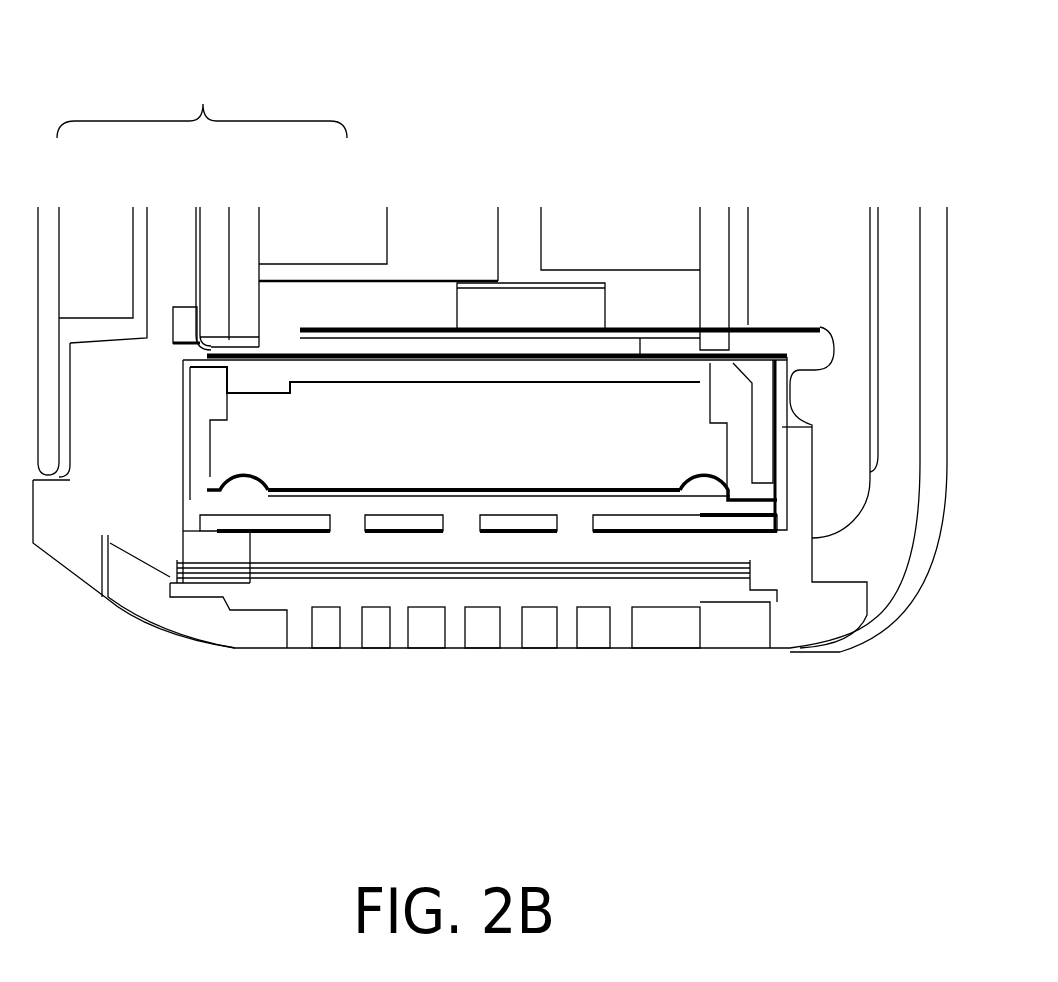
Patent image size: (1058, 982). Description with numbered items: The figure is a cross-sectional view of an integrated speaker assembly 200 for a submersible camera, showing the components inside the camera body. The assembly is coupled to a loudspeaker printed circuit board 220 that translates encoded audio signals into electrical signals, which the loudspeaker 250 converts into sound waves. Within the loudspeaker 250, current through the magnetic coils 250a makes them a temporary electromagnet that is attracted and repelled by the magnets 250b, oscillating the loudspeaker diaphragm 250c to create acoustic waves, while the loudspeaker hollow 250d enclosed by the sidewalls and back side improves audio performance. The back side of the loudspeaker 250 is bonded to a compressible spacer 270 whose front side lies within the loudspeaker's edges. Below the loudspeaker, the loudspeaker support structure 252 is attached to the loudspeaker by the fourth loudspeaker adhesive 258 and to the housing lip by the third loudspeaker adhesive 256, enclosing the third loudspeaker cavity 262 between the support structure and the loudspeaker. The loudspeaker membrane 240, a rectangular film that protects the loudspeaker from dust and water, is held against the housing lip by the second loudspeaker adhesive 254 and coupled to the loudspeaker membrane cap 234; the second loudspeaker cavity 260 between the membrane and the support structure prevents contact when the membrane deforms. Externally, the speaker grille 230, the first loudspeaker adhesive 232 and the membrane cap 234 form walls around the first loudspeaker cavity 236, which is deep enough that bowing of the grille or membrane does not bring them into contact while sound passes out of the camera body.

The integrated speaker assembly 200 is at (537, 53).
The loudspeaker printed circuit board 220 is at (714, 262).
The compressible spacer 270 is at (574, 342).
The loudspeaker 250 is at (422, 213).
The magnetic coils 250a is at (308, 478).
The magnets 250b is at (357, 376).
The loudspeaker diaphragm 250c is at (250, 468).
The loudspeaker hollow 250d is at (420, 445).
The fourth loudspeaker adhesive 258 is at (205, 510).
The third loudspeaker adhesive 256 is at (217, 530).
The second loudspeaker adhesive 254 is at (177, 558).
The first loudspeaker adhesive 232 is at (172, 577).
The third loudspeaker cavity 262 is at (328, 518).
The second loudspeaker cavity 260 is at (347, 553).
The first loudspeaker cavity 236 is at (402, 588).
The speaker grille 230 is at (424, 623).
The loudspeaker membrane 240 is at (468, 572).
The loudspeaker support structure 252 is at (512, 525).
The loudspeaker membrane cap 234 is at (735, 580).